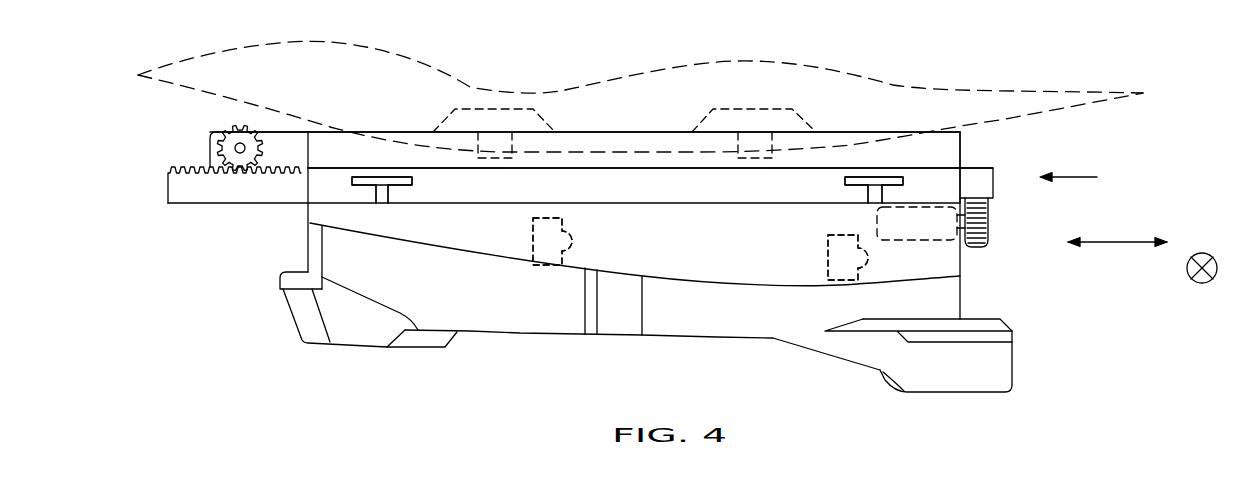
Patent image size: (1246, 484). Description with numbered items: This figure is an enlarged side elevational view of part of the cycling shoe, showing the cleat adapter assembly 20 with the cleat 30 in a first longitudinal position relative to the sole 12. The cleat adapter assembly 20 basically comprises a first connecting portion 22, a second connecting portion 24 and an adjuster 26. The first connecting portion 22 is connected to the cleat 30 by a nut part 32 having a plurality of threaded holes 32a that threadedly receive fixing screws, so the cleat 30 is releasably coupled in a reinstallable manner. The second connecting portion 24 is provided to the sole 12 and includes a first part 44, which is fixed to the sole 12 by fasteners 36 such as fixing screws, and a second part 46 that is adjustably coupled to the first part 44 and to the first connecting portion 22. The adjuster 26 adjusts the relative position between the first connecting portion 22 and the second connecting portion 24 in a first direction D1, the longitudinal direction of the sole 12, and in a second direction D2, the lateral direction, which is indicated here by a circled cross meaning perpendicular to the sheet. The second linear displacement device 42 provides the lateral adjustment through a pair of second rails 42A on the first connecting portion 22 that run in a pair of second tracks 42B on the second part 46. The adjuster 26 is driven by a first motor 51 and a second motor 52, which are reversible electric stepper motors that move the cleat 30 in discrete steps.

The sole 12 is at (1058, 117).
The cleat adapter assembly 20 is at (1082, 178).
The first connecting portion 22 is at (789, 290).
The second connecting portion 24 is at (970, 58).
The adjuster 26 is at (268, 227).
The cleat 30 is at (716, 341).
The nut part 32 is at (792, 250).
The threaded holes 32a is at (562, 250).
The fasteners 36 is at (481, 109).
The second linear displacement device 42 is at (357, 207).
The second rails 42A is at (371, 177).
The second tracks 42B is at (394, 182).
The first part 44 is at (904, 128).
The second part 46 is at (946, 164).
The first motor 51 is at (277, 128).
The second motor 52 is at (933, 247).
The first direction D1 is at (1115, 240).
The second direction D2 is at (1210, 254).